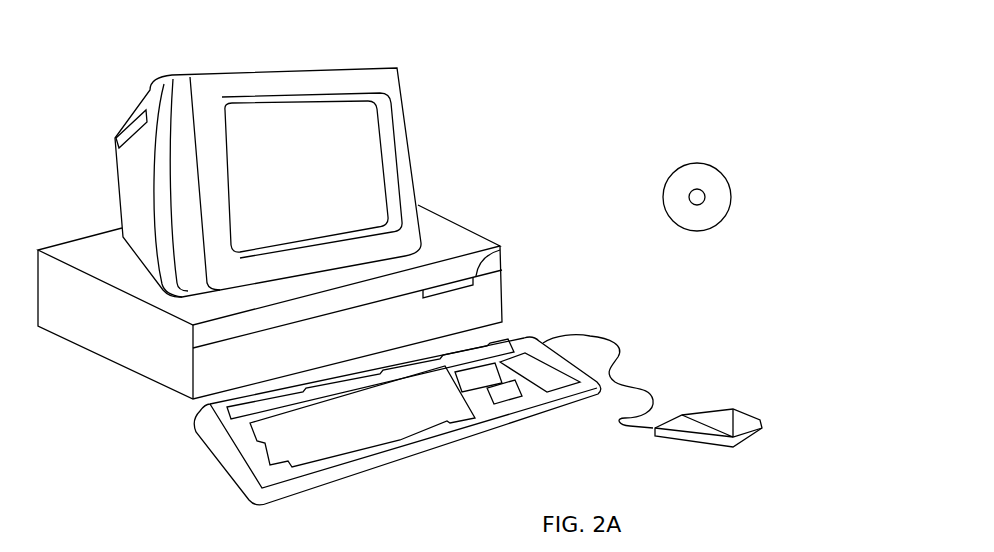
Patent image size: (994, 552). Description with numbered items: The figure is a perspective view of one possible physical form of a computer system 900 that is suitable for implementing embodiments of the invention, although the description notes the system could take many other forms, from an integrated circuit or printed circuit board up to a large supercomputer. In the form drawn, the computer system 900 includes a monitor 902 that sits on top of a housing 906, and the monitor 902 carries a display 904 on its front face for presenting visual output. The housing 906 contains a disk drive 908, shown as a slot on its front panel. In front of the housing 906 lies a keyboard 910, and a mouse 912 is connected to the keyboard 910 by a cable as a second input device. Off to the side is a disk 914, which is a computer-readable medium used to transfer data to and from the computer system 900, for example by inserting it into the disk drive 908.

The computer system 900 is at (615, 47).
The monitor 902 is at (417, 182).
The display 904 is at (376, 131).
The housing 906 is at (147, 382).
The disk drive 908 is at (503, 246).
The keyboard 910 is at (400, 459).
The mouse 912 is at (742, 409).
The disk 914 is at (713, 166).